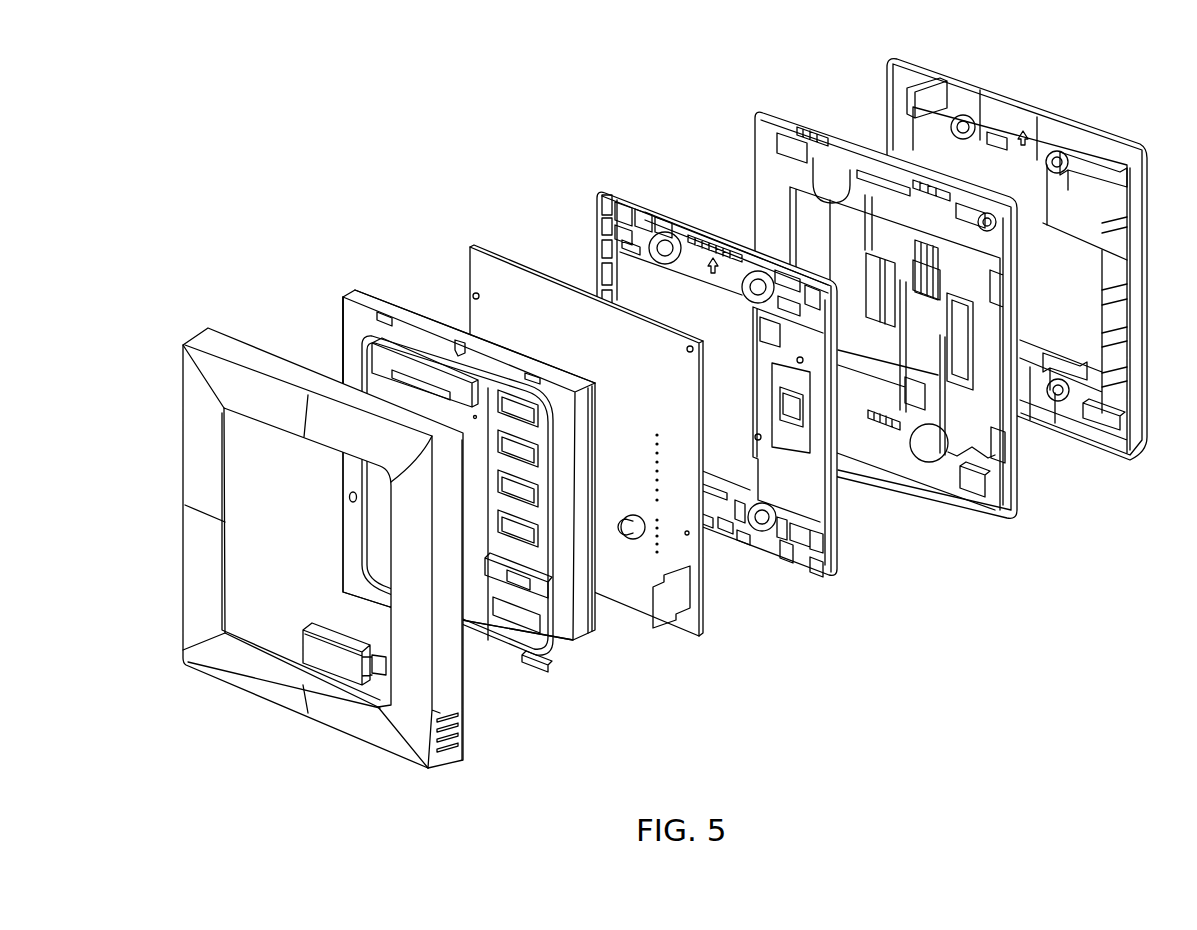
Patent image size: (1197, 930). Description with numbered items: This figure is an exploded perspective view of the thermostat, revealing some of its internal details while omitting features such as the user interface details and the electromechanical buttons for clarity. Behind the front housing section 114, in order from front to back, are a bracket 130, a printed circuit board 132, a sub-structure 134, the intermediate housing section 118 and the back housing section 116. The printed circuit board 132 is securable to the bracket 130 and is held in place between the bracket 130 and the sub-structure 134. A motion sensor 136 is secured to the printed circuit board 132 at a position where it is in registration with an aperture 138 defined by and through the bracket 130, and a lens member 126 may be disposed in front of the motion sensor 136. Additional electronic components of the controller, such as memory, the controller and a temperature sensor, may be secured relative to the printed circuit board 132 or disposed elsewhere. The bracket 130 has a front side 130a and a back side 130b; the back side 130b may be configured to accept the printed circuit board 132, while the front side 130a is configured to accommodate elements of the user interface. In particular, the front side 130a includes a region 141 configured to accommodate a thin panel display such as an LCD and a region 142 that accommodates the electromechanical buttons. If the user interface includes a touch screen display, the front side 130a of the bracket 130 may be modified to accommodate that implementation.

The front housing section 114 is at (303, 534).
The back housing section 116 is at (918, 57).
The intermediate housing section 118 is at (783, 103).
The lens member 126 is at (320, 632).
The bracket 130 is at (415, 474).
The front side 130a is at (325, 322).
The back side 130b is at (432, 306).
The printed circuit board 132 is at (575, 443).
The sub-structure 134 is at (630, 190).
The motion sensor 136 is at (631, 540).
The aperture 138 is at (527, 656).
The region 141 is at (345, 377).
The region 142 is at (512, 391).